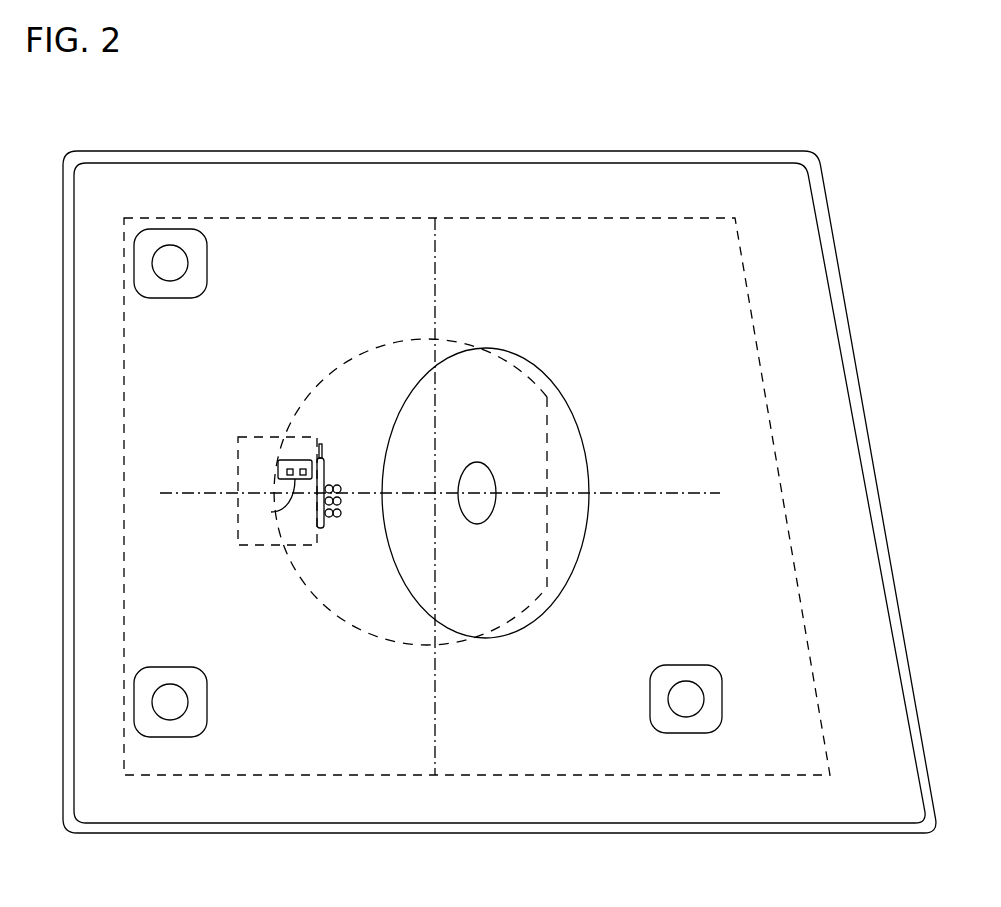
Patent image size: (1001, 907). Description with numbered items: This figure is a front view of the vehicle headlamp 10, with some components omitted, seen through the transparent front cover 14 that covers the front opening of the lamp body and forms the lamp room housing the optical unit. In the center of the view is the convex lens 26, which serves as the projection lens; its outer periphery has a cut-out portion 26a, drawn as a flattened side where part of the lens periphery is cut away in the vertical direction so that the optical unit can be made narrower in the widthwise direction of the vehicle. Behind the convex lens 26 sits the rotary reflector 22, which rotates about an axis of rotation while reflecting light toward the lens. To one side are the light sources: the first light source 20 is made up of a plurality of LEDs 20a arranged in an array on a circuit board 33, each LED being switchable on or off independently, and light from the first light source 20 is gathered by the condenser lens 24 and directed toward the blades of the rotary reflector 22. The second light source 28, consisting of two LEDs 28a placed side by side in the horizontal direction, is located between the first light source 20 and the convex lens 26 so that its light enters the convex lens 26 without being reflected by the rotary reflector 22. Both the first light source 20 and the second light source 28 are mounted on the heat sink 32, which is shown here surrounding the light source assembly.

The vehicle headlamp 10 is at (507, 896).
The front cover 14 is at (578, 150).
The first light source 20 is at (332, 536).
The LEDs 20a is at (328, 485).
The rotary reflector 22 is at (534, 628).
The condenser lens 24 is at (340, 517).
The convex lens 26 is at (313, 390).
The cut-out portion 26a is at (548, 547).
The second light source 28 is at (292, 447).
The LEDs 28a is at (272, 512).
The heat sink 32 is at (238, 455).
The circuit board 33 is at (320, 444).